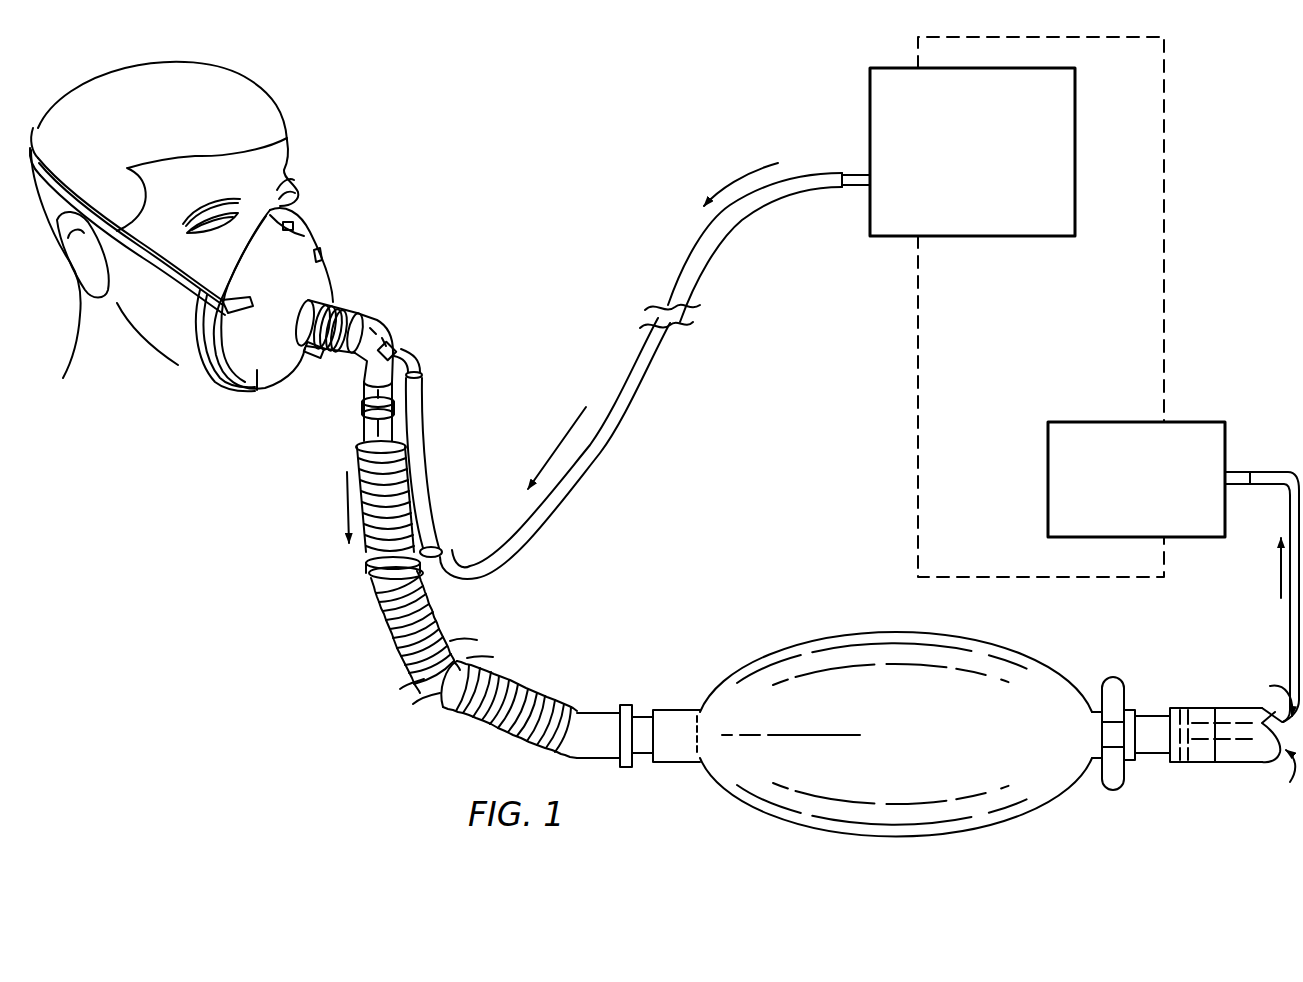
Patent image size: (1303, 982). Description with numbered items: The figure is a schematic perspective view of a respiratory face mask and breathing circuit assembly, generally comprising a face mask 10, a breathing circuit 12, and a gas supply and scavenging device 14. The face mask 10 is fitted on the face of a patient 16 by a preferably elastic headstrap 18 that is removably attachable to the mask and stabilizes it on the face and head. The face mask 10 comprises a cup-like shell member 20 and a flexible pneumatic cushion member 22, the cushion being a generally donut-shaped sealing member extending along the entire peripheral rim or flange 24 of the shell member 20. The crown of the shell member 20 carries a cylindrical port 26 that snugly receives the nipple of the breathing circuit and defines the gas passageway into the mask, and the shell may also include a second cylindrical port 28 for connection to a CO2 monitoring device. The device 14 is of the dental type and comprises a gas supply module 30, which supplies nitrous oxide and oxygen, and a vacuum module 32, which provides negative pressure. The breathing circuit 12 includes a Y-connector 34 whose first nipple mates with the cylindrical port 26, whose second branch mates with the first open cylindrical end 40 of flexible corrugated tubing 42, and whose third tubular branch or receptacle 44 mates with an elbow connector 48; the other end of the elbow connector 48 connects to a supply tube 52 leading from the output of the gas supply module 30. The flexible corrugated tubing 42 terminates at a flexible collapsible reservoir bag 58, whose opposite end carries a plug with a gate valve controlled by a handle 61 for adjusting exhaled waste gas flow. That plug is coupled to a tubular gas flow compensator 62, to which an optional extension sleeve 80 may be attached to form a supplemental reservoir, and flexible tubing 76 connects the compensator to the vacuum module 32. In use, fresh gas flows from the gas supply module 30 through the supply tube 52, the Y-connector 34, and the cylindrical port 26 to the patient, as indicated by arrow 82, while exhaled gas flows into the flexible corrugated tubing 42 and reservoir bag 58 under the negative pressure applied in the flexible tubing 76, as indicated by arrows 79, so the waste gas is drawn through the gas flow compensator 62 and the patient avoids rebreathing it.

The face mask 10 is at (404, 148).
The breathing circuit 12 is at (555, 630).
The gas supply and scavenging device 14 is at (1135, 292).
The patient 16 is at (283, 100).
The headstrap 18 is at (177, 290).
The shell member 20 is at (258, 372).
The flexible pneumatic cushion member 22 is at (205, 370).
The peripheral rim or flange 24 is at (220, 385).
The cylindrical port 26 is at (303, 334).
The second cylindrical port 28 is at (306, 358).
The gas supply module 30 is at (868, 115).
The vacuum module 32 is at (1228, 436).
The Y-connector 34 is at (373, 320).
The first open cylindrical end 40 is at (392, 430).
The flexible corrugated tubing 42 is at (400, 640).
The third tubular branch or receptacle 44 is at (384, 348).
The elbow connector 48 is at (413, 370).
The supply tube 52 is at (633, 390).
The reservoir bag 58 is at (745, 785).
The handle 61 is at (1120, 694).
The gas flow compensator 62 is at (1186, 765).
The flexible tubing 76 is at (1289, 628).
The arrows 79 is at (340, 520).
The extension sleeve 80 is at (1237, 763).
The arrow 82 is at (733, 175).